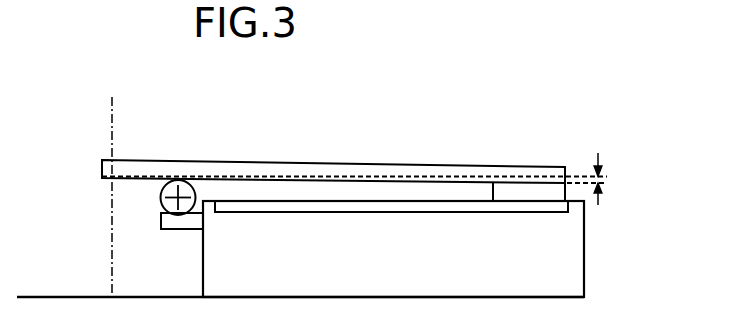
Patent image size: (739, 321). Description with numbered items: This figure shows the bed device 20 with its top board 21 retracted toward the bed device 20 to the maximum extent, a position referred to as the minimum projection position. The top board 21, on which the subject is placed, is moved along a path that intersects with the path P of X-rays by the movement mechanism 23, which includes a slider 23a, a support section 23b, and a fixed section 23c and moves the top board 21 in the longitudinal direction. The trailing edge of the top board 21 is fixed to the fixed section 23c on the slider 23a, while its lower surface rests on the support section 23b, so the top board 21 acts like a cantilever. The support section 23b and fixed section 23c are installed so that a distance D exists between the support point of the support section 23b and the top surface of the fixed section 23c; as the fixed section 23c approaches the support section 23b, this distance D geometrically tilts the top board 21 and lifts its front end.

The bed device 20 is at (585, 246).
The top board 21 is at (338, 163).
The movement mechanism 23 is at (351, 176).
The slider 23a is at (412, 201).
The support section 23b is at (161, 199).
The fixed section 23c is at (519, 159).
The path of X-rays P is at (113, 110).
The distance D is at (604, 181).